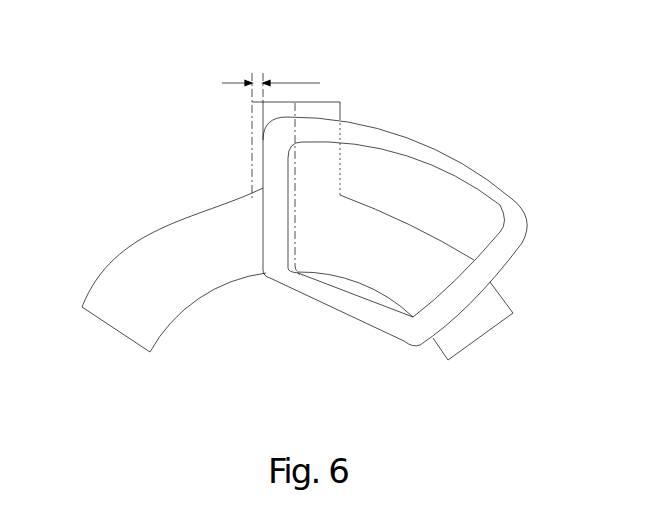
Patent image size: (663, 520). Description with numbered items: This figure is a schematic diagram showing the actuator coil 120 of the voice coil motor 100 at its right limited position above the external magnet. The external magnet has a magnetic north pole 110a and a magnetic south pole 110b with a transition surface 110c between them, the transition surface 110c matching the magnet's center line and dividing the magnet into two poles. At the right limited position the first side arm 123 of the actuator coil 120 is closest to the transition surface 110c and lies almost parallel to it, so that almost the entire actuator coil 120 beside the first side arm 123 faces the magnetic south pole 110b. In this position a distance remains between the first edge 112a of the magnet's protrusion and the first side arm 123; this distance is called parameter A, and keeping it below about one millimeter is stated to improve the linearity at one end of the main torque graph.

The voice coil motor 100 is at (86, 38).
The actuator coil 120 is at (432, 148).
The magnetic north pole 110a is at (170, 311).
The magnetic south pole 110b is at (452, 332).
The transition surface 110c is at (297, 195).
The first edge 112a is at (252, 160).
The first side arm 123 is at (277, 213).